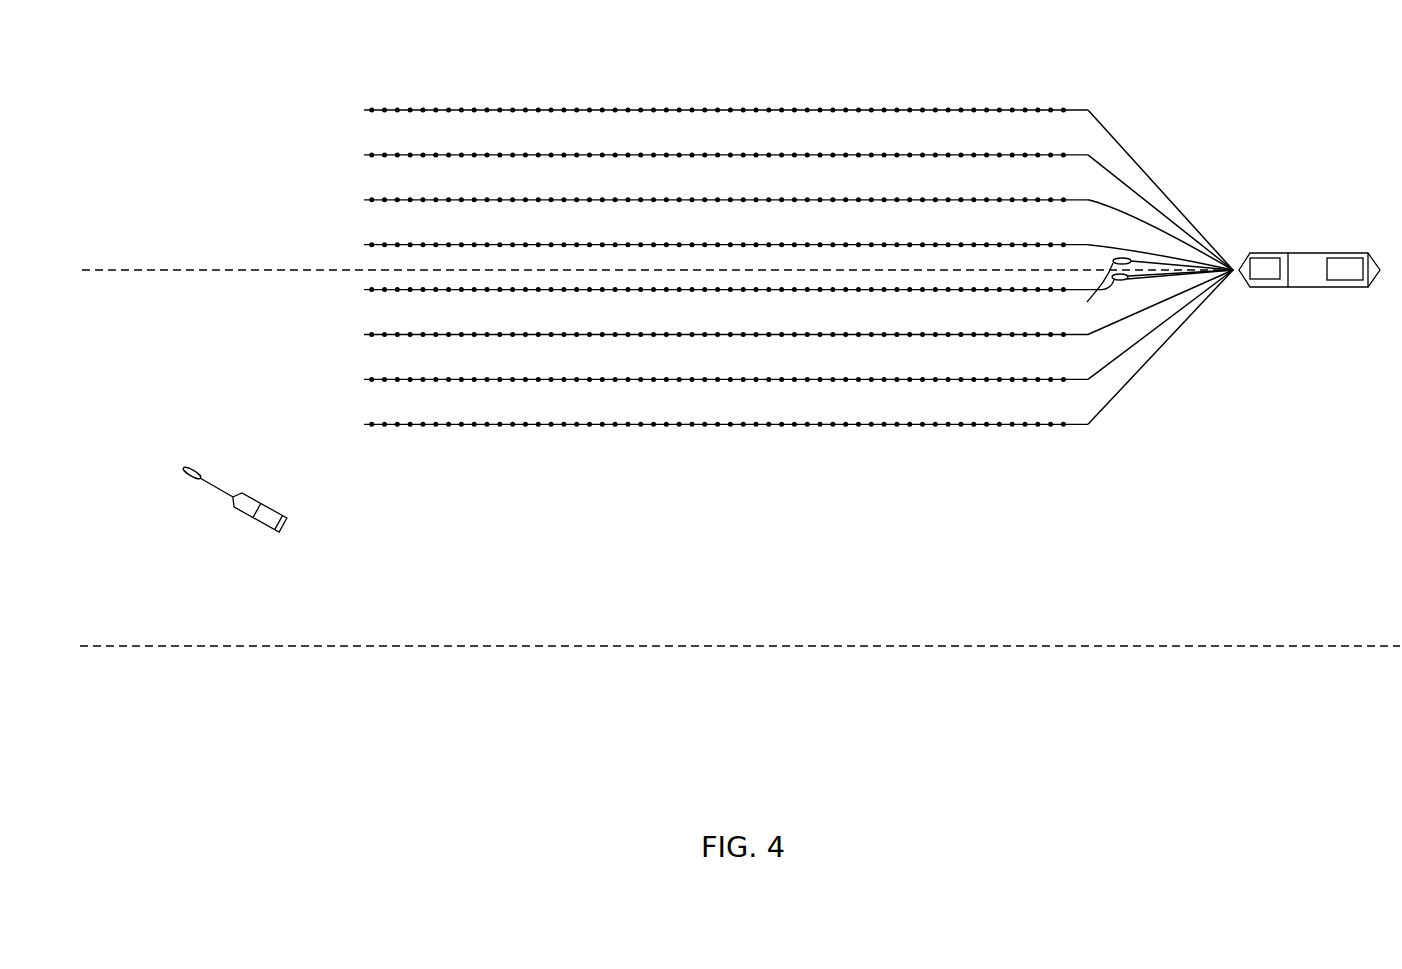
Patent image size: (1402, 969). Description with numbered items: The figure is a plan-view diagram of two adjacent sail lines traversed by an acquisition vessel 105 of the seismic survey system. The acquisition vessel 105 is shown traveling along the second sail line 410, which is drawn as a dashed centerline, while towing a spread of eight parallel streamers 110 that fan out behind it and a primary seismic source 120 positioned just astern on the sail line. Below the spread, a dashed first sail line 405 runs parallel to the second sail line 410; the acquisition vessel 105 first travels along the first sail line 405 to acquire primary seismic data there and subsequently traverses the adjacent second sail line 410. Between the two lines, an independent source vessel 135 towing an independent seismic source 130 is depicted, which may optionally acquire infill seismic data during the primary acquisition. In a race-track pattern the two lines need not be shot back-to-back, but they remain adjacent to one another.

The acquisition vessel 105 is at (1345, 287).
The streamers 110 is at (466, 108).
The primary seismic source 120 is at (1090, 300).
The independent seismic source 130 is at (186, 478).
The independent source vessel 135 is at (265, 506).
The first sail line 405 is at (305, 644).
The second sail line 410 is at (306, 268).